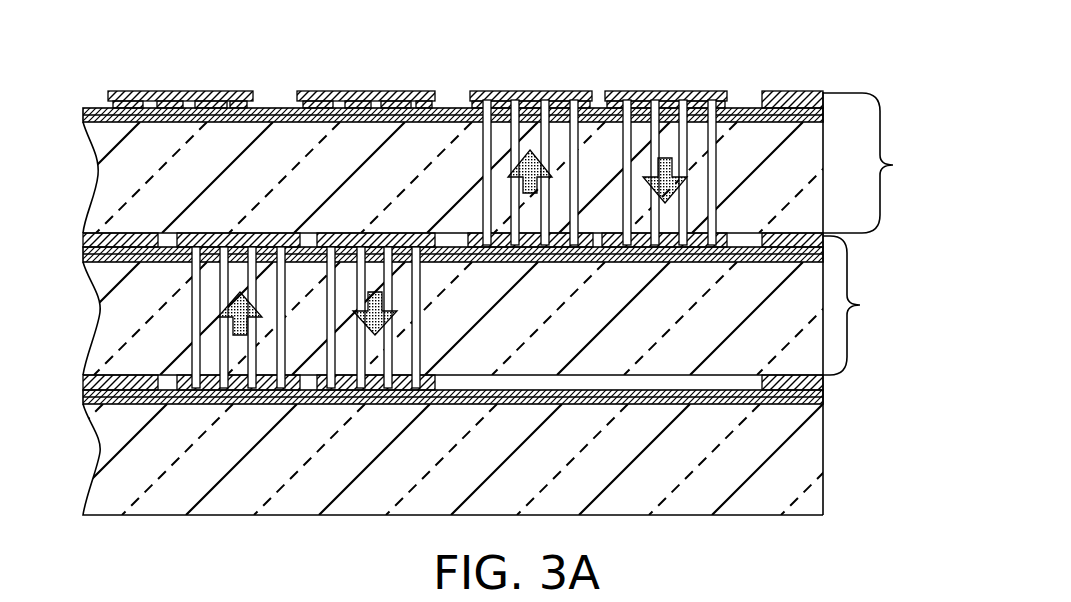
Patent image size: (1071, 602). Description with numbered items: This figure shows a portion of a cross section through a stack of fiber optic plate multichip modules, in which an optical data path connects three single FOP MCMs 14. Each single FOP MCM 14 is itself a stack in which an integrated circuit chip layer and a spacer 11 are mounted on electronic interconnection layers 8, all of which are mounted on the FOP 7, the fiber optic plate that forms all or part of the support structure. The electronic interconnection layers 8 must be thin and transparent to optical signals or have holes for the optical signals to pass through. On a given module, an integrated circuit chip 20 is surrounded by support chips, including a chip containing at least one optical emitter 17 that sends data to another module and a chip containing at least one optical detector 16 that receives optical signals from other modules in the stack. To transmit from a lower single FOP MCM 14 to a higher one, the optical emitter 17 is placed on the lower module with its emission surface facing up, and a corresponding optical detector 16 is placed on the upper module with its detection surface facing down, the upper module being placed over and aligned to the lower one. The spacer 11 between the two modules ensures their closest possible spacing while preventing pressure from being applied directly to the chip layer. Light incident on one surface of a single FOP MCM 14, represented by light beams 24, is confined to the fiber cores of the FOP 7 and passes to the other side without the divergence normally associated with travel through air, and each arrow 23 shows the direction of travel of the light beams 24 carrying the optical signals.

The FOP 7 is at (812, 160).
The electronic interconnection layers 8 is at (824, 112).
The spacer 11 is at (775, 93).
The single FOP MCM 14 is at (908, 165).
The optical detector 16 is at (532, 92).
The optical emitter 17 is at (668, 92).
The integrated circuit chip 20 is at (168, 92).
The arrow 23 is at (228, 311).
The light beams 24 is at (712, 177).